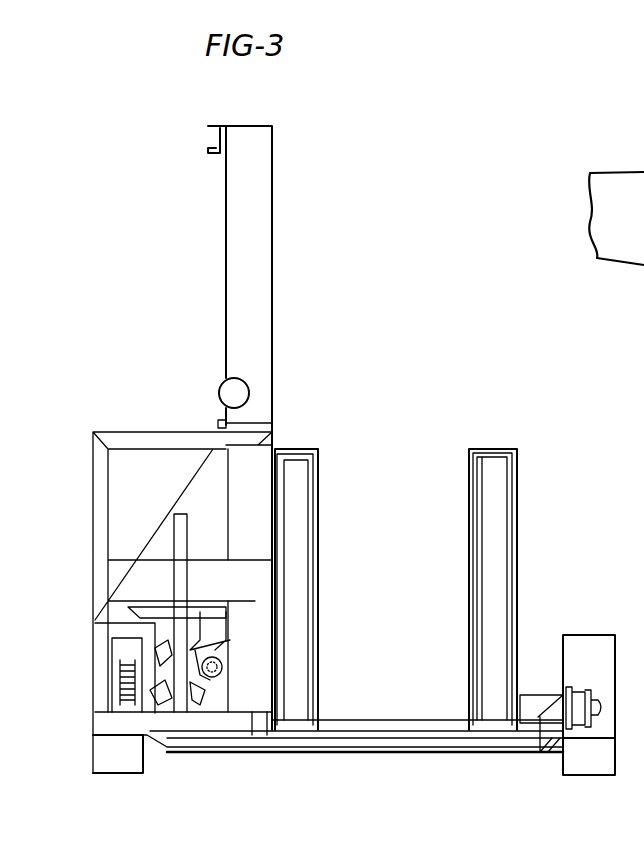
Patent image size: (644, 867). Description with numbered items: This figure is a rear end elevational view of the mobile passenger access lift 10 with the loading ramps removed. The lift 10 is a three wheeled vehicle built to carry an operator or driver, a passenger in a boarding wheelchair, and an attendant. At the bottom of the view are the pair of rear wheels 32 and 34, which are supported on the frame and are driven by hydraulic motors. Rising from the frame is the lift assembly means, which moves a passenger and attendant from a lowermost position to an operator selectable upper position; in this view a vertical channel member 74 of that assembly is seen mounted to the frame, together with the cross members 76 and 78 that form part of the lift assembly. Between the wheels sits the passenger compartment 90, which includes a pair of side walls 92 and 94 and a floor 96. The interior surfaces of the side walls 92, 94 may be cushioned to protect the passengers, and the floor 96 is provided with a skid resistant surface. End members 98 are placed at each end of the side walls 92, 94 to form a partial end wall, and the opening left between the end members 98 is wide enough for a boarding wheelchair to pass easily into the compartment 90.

The mobile passenger access lift 10 is at (367, 232).
The rear wheel 32 is at (127, 762).
The rear wheel 34 is at (565, 765).
The vertical channel member 74 is at (243, 304).
The cross member 76 is at (222, 427).
The cross member 78 is at (273, 133).
The passenger compartment 90 is at (403, 527).
The side wall 92 is at (280, 473).
The side wall 94 is at (510, 520).
The floor 96 is at (382, 720).
The end member 98 is at (295, 512).